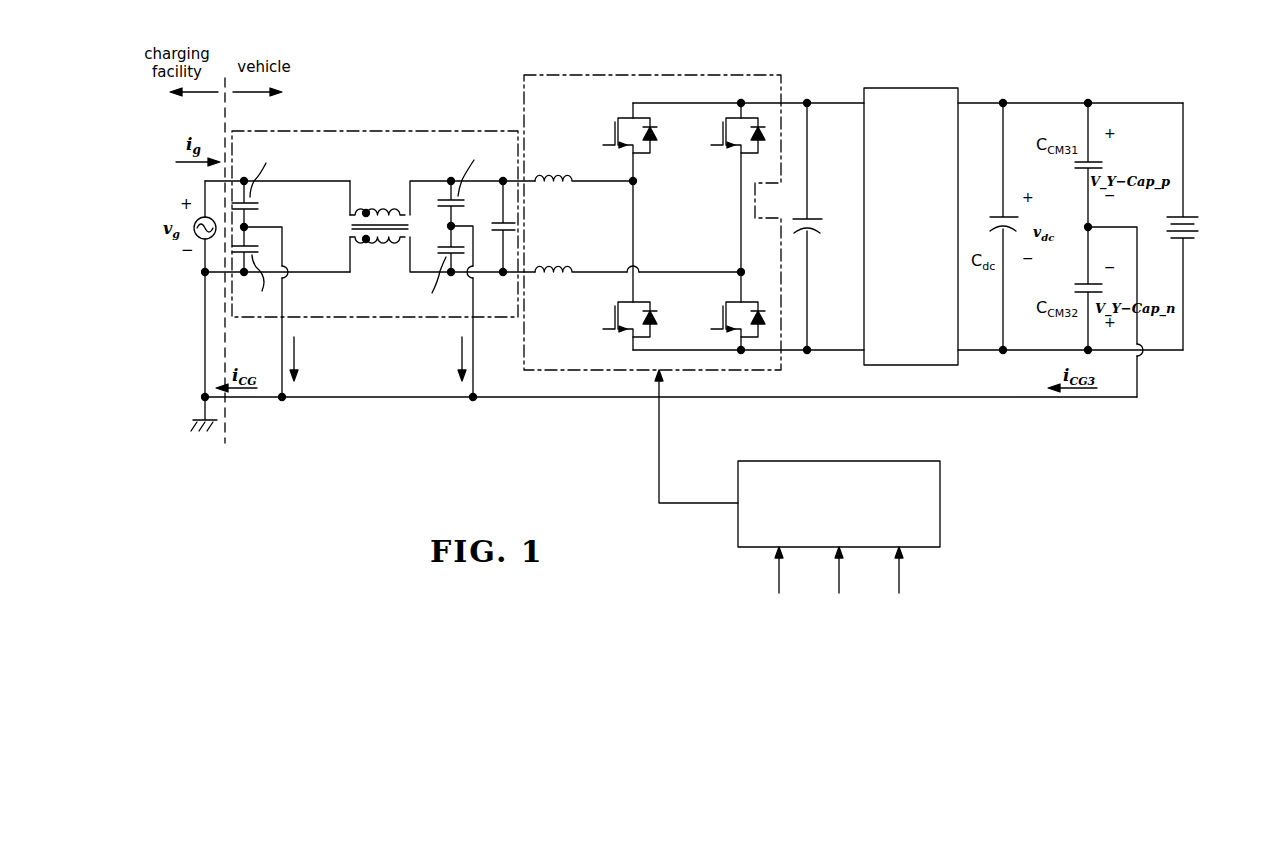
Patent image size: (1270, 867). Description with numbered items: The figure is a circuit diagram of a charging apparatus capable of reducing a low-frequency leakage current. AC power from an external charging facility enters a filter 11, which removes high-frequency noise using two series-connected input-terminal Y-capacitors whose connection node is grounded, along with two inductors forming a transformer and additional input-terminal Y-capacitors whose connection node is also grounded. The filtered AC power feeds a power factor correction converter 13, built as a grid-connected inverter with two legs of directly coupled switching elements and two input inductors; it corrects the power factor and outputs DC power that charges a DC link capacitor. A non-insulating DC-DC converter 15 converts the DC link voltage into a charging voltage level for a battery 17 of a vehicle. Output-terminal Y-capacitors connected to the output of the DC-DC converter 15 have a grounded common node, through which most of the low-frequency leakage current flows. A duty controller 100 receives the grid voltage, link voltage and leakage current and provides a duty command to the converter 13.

The filter 11 is at (421, 131).
The power factor correction (PFC) converter 13 is at (714, 75).
The DC-DC converter 15 is at (910, 88).
The battery 17 is at (1200, 225).
The duty controller 100 is at (940, 503).